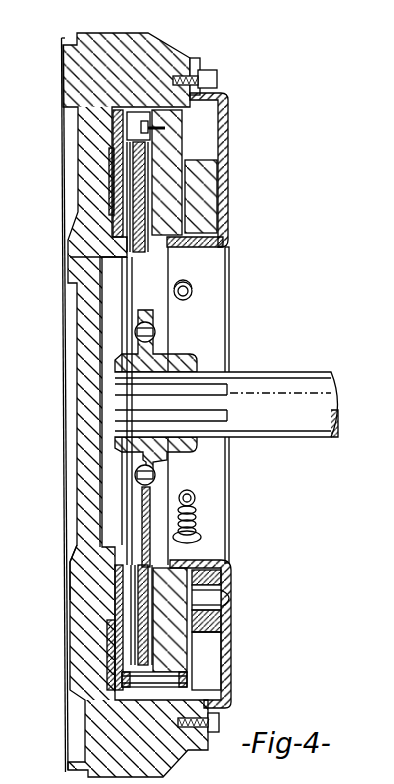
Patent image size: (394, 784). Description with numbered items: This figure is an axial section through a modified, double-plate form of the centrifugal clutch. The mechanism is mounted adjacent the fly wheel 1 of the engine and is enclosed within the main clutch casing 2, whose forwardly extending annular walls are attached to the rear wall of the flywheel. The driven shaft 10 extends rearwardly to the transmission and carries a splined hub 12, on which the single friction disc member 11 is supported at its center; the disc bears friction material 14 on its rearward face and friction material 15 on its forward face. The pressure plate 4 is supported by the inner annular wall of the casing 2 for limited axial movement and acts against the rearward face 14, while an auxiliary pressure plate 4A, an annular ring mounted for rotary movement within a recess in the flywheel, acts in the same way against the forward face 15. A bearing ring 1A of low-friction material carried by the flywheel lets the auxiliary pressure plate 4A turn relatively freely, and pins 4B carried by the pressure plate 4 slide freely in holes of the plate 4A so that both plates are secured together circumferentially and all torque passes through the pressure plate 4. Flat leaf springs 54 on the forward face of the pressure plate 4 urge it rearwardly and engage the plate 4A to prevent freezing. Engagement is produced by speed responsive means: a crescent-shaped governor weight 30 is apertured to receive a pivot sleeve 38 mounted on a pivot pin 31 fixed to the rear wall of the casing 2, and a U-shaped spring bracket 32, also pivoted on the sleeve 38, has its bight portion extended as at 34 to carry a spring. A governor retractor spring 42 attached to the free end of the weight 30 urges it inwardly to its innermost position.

The fly wheel 1 is at (95, 565).
The bearing ring 1A is at (115, 647).
The main clutch casing 2 is at (224, 138).
The pressure plate 4 is at (212, 567).
The auxiliary pressure plate 4A is at (128, 590).
The pins 4B is at (140, 680).
The driven shaft 10 is at (278, 385).
The friction disc member 11 is at (143, 512).
The hub 12 is at (200, 357).
The friction material 14 is at (190, 560).
The friction material 15 is at (110, 560).
The governor weight 30 is at (205, 197).
The pivot pin 31 is at (229, 600).
The spring bracket 32 is at (221, 635).
The bight portion extension 34 is at (210, 669).
The pivot sleeve 38 is at (229, 613).
The governor retractor spring 42 is at (195, 292).
The leaf springs 54 is at (137, 116).